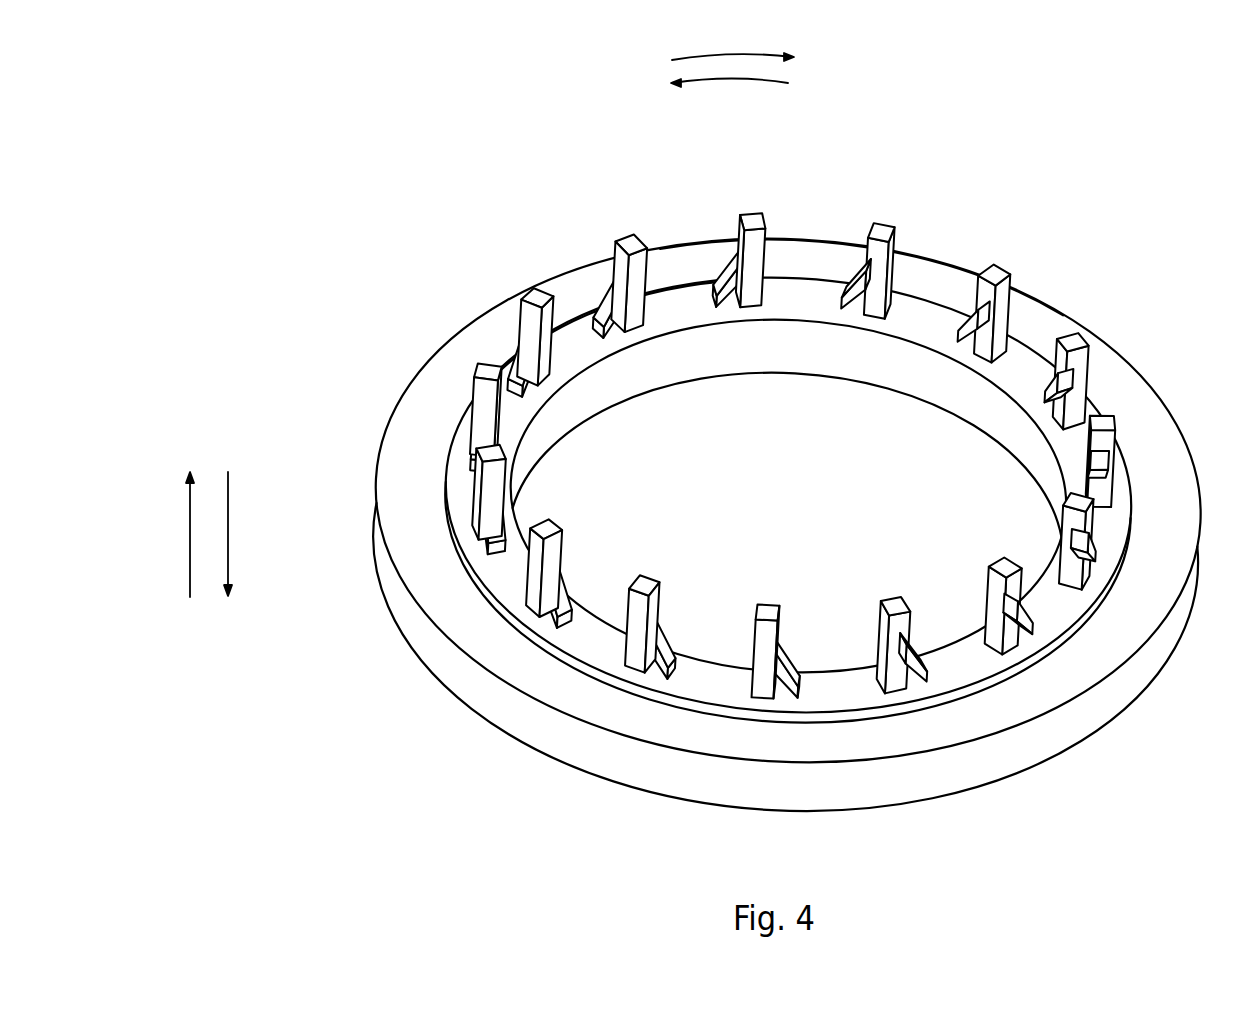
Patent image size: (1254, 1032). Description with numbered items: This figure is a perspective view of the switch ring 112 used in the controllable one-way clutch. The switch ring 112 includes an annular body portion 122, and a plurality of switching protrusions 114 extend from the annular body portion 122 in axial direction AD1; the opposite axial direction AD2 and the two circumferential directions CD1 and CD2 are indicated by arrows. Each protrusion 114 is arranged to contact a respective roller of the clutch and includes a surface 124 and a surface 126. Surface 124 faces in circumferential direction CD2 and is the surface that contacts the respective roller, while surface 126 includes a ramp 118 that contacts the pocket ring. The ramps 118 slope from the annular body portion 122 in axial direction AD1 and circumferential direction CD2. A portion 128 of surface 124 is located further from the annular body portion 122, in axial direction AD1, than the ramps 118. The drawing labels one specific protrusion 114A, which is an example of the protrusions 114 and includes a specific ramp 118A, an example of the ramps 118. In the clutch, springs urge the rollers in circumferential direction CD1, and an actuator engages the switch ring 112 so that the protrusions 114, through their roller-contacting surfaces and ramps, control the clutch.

The switch ring 112 is at (1088, 215).
The switching protrusions 114 is at (749, 212).
The protrusion 114A is at (773, 602).
The ramp 118 is at (738, 262).
The ramp 118A is at (790, 663).
The annular body portion 122 is at (1162, 391).
The surface 124 is at (777, 258).
The surface 126 is at (609, 283).
The portion 128 is at (925, 263).
The circumferential direction CD1 is at (768, 84).
The circumferential direction CD2 is at (738, 56).
The axial direction AD1 is at (188, 535).
The axial direction AD2 is at (230, 535).